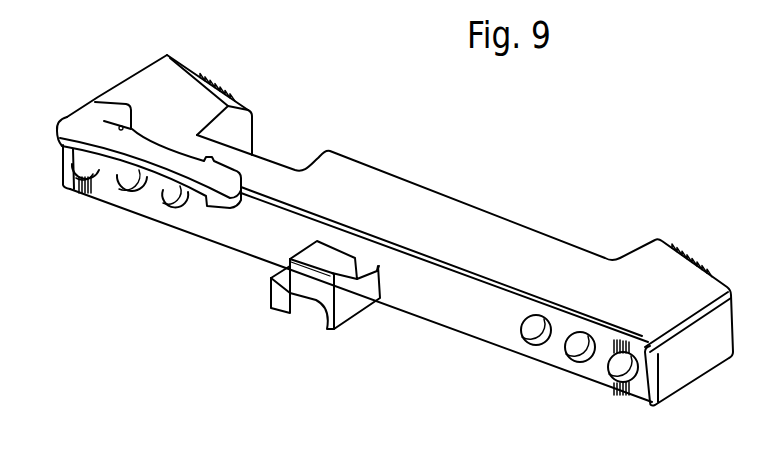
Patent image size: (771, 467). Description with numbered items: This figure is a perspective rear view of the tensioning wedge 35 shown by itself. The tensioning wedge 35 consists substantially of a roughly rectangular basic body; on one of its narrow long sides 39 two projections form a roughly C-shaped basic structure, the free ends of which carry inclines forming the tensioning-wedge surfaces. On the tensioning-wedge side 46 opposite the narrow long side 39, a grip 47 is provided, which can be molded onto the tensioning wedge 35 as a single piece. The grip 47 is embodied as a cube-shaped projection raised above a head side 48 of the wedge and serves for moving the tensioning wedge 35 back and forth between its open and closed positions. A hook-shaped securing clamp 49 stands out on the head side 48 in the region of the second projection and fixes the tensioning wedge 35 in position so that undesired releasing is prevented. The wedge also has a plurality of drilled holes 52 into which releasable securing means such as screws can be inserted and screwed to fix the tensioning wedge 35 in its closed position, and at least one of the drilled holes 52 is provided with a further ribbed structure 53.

The tensioning wedge 35 is at (537, 220).
The narrow long side 39 is at (443, 193).
The tensioning-wedge side 46 is at (470, 309).
The grip 47 is at (324, 291).
The head side 48 is at (349, 189).
The securing clamp 49 is at (85, 134).
The drilled holes 52 is at (174, 203).
The further ribbed structure 53 is at (78, 190).